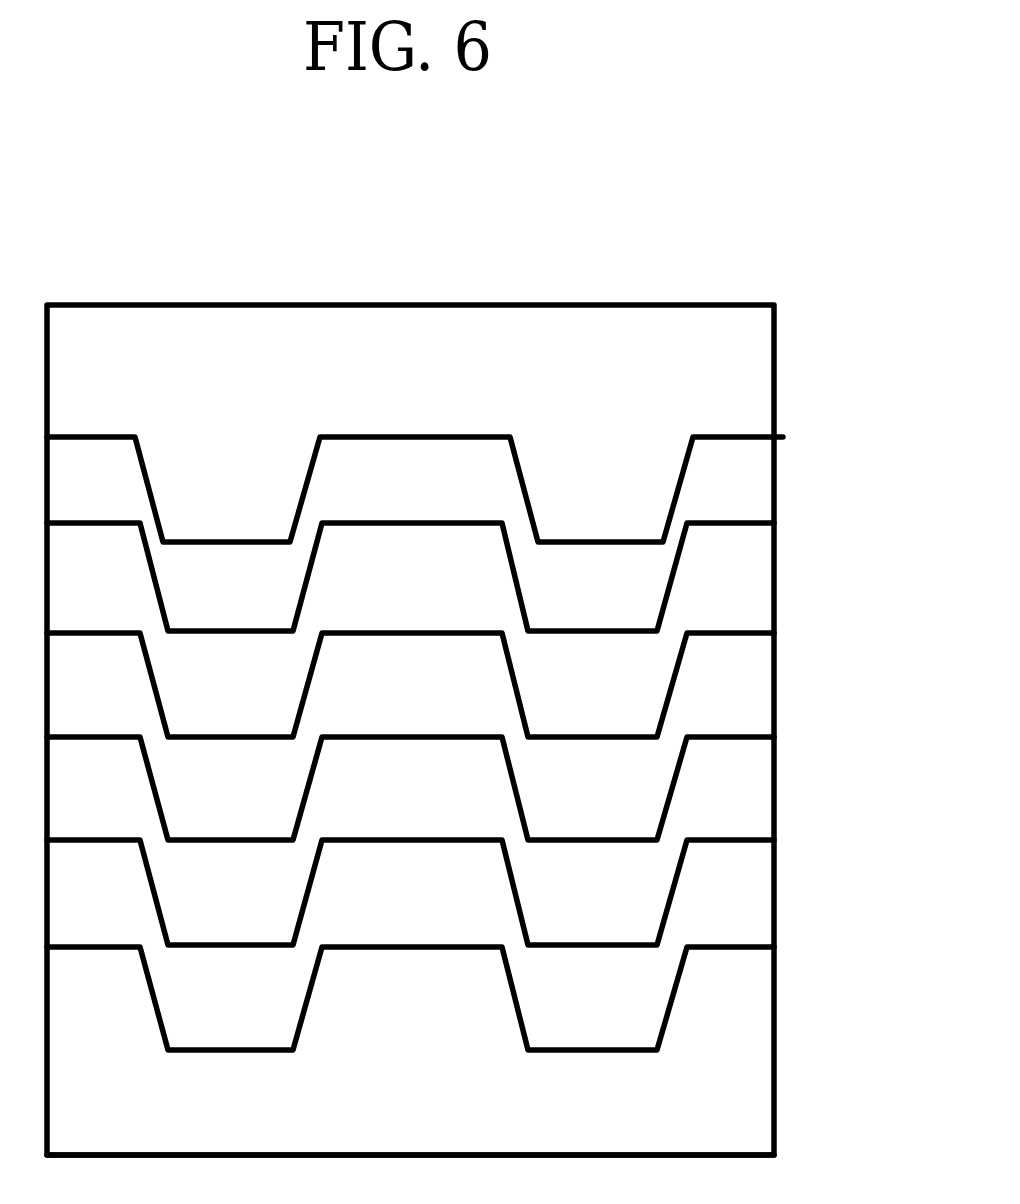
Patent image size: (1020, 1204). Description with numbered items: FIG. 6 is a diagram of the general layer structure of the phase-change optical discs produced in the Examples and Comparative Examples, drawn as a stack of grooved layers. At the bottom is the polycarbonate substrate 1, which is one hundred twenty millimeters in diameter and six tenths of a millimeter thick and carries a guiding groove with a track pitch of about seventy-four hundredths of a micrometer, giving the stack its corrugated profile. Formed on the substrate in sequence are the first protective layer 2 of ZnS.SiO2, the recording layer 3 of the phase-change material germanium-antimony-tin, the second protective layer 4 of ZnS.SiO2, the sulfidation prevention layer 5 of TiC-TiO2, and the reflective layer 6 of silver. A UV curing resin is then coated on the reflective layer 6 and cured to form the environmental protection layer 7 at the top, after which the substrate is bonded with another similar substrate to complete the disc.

The polycarbonate substrate 1 is at (737, 1072).
The first protective layer 2 is at (727, 905).
The recording layer 3 is at (728, 800).
The second protective layer 4 is at (728, 705).
The sulfidation prevention layer 5 is at (728, 600).
The reflective layer 6 is at (728, 483).
The environmental protection layer 7 is at (735, 407).